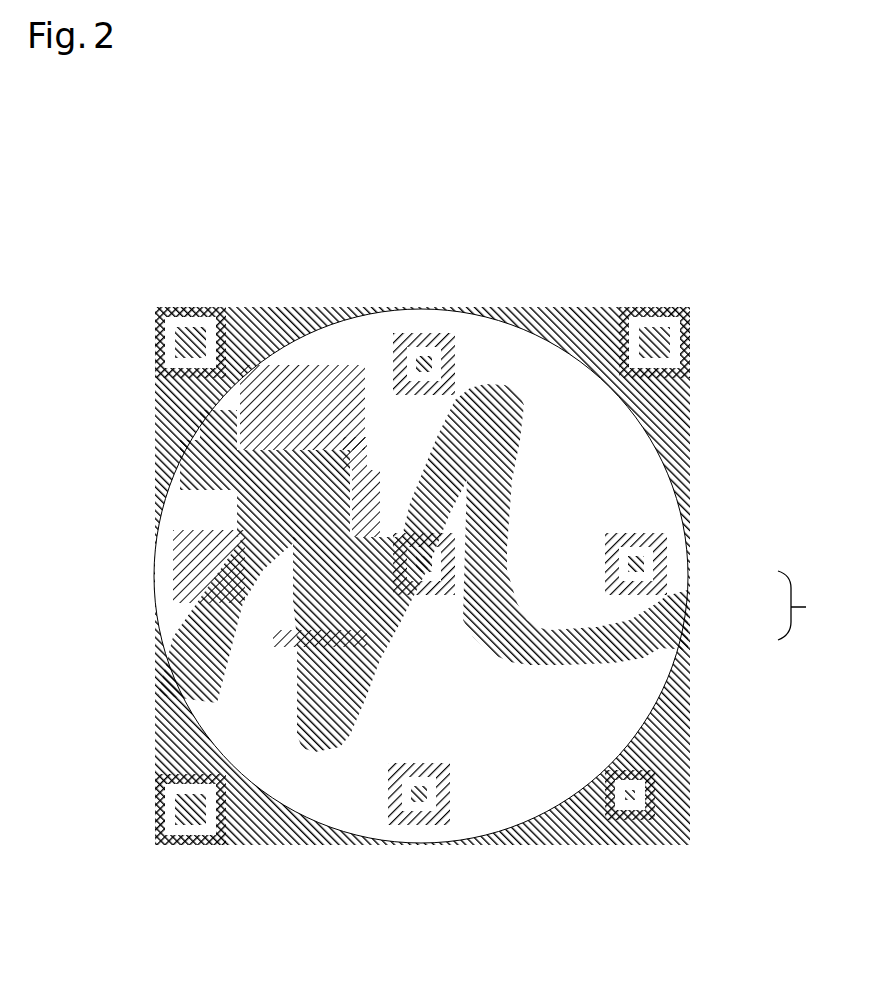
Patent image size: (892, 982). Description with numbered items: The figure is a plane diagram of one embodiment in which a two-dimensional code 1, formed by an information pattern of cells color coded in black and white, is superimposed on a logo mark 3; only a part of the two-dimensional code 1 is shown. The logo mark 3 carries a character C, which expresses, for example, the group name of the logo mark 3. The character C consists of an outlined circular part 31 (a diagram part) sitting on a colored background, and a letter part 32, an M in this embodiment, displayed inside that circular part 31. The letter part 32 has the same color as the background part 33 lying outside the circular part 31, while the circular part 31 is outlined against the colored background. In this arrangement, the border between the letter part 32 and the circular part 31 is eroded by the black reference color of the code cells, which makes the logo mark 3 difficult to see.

The two-dimensional code 1 is at (332, 418).
The logo mark 3 is at (665, 418).
The circular part 31 is at (465, 568).
The letter part 32 is at (657, 639).
The background part 33 is at (668, 477).
The character C is at (806, 605).